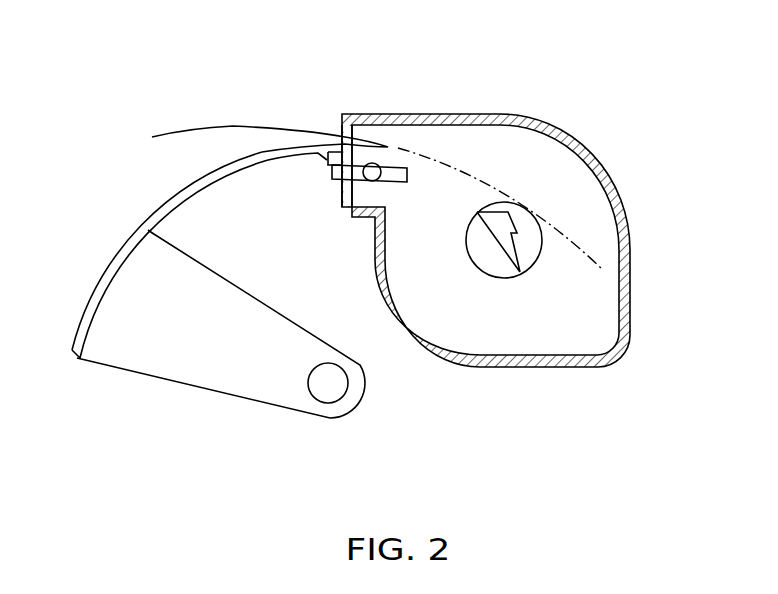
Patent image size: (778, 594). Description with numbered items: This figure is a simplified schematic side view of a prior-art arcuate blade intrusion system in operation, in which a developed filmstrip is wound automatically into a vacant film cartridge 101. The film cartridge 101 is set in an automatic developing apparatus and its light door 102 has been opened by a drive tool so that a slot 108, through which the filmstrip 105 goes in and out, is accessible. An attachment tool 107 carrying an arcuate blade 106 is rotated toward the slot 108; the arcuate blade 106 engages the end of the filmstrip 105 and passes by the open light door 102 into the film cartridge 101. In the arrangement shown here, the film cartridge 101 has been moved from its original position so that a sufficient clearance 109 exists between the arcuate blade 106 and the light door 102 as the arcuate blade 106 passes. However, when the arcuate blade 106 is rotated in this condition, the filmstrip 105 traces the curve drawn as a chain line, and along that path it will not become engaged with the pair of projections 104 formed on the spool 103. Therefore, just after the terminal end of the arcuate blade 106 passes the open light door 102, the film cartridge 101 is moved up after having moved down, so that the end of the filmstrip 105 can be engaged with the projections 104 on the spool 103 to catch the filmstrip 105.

The film cartridge 101 is at (593, 150).
The light door 102 is at (337, 180).
The spool 103 is at (493, 260).
The projections 104 is at (525, 212).
The filmstrip 105 is at (228, 127).
The arcuate blade 106 is at (183, 198).
The attachment tool 107 is at (232, 363).
The slot 108 is at (341, 133).
The clearance 109 is at (325, 157).